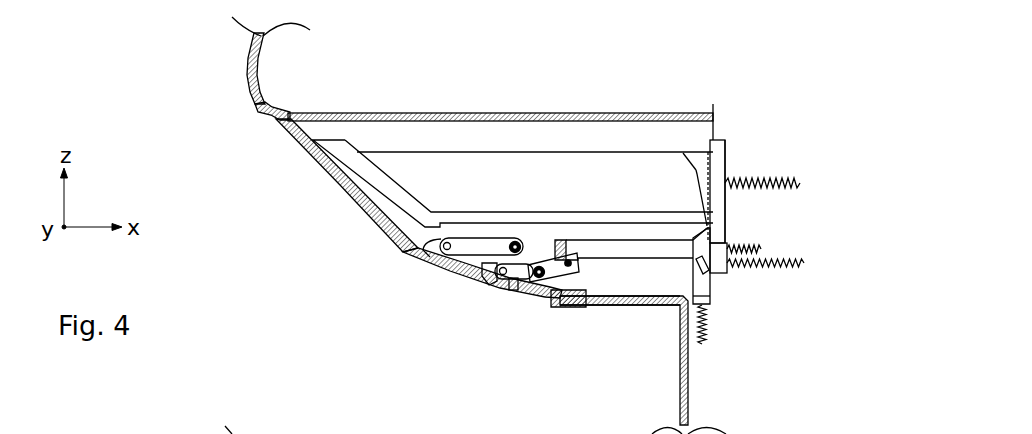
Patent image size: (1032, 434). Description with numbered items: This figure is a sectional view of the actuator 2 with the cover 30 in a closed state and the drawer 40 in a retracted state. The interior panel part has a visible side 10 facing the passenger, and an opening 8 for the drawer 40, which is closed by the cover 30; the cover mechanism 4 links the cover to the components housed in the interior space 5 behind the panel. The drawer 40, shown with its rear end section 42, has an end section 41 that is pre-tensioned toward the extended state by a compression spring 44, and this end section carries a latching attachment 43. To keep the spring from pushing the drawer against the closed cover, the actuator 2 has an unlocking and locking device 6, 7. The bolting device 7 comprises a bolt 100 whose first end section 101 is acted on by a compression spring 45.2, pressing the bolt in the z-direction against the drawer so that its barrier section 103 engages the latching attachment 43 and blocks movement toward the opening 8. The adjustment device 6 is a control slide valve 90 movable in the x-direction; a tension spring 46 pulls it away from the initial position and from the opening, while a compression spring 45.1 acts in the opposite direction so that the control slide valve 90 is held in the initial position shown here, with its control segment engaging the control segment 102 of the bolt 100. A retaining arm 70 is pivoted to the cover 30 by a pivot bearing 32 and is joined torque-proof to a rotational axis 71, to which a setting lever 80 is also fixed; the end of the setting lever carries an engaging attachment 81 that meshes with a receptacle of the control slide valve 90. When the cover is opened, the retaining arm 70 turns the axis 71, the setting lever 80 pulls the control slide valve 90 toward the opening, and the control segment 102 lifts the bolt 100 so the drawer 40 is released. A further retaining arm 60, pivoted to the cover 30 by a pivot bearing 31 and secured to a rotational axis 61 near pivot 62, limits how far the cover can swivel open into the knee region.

The actuator 2 is at (761, 376).
The cover mechanism 4 is at (400, 336).
The interior space 5 is at (620, 136).
The unlocking device (adjustment device) 6 is at (625, 291).
The bolting device 7 is at (786, 296).
The opening 8 is at (261, 118).
The visible side 10 is at (234, 80).
The cover 30 is at (360, 212).
The pivot bearing 31 is at (425, 244).
The pivot bearing 32 is at (482, 288).
The drawer 40 is at (721, 161).
The end section 41 is at (730, 161).
The rear end section 42 is at (373, 187).
The latching attachment 43 is at (716, 231).
The compression spring 44 is at (803, 183).
The compression spring 45.1 is at (763, 249).
The compression spring 45.2 is at (704, 343).
The tension spring 46 is at (808, 263).
The retaining arm 60 is at (453, 242).
The rotational axis 61 is at (515, 240).
The pivot pin 62 is at (444, 250).
The retaining arm 70 is at (513, 291).
The rotational axis 71 is at (540, 298).
The setting lever 80 is at (570, 309).
The engaging attachment 81 is at (573, 254).
The control slide valve 90 is at (629, 250).
The bolt 100 is at (706, 289).
The first end section 101 is at (711, 312).
The control segment 102 is at (692, 262).
The barrier section 103 is at (677, 150).